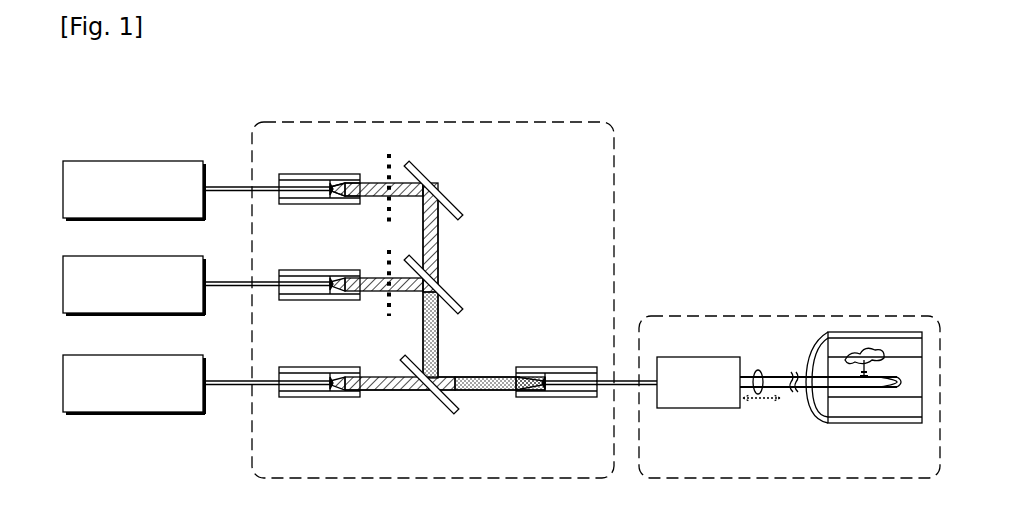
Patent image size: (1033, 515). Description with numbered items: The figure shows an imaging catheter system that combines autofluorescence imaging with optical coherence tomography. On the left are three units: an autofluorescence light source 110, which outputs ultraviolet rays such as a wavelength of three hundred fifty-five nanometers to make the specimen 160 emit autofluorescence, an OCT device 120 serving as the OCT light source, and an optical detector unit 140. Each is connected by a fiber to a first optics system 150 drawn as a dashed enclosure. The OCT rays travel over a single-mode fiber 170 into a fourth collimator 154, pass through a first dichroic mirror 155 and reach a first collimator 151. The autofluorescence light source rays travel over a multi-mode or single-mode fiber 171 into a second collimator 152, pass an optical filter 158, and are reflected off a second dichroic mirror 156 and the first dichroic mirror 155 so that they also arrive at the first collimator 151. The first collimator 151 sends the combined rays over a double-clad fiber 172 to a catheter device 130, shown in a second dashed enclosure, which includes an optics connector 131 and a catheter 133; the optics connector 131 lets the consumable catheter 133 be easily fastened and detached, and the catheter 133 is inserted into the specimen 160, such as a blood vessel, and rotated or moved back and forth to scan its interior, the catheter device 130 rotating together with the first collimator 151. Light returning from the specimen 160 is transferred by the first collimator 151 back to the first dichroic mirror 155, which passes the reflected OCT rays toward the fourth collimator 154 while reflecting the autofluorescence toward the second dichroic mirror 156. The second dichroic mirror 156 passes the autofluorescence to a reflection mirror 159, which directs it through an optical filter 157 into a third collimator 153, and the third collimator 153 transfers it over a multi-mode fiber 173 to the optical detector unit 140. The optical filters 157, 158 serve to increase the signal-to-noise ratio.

The autofluorescence light source 110 is at (158, 256).
The OCT device 120 is at (158, 355).
The catheter device 130 is at (790, 316).
The optics connector 131 is at (700, 408).
The catheter 133 is at (800, 392).
The optical detector unit 140 is at (158, 161).
The first optics system 150 is at (430, 122).
The first collimator 151 is at (556, 367).
The second collimator 152 is at (308, 270).
The third collimator 153 is at (308, 174).
The fourth collimator 154 is at (308, 367).
The first dichroic mirror 155 is at (433, 402).
The second dichroic mirror 156 is at (452, 290).
The optical filter 157 is at (385, 208).
The optical filter 158 is at (385, 302).
The reflection mirror 159 is at (452, 196).
The specimen 160 is at (870, 423).
The single-mode fiber 170 is at (224, 380).
The multi-mode fiber or single-mode fiber 171 is at (224, 281).
The double-clad fiber 172 is at (626, 378).
The multi-mode fiber 173 is at (224, 186).